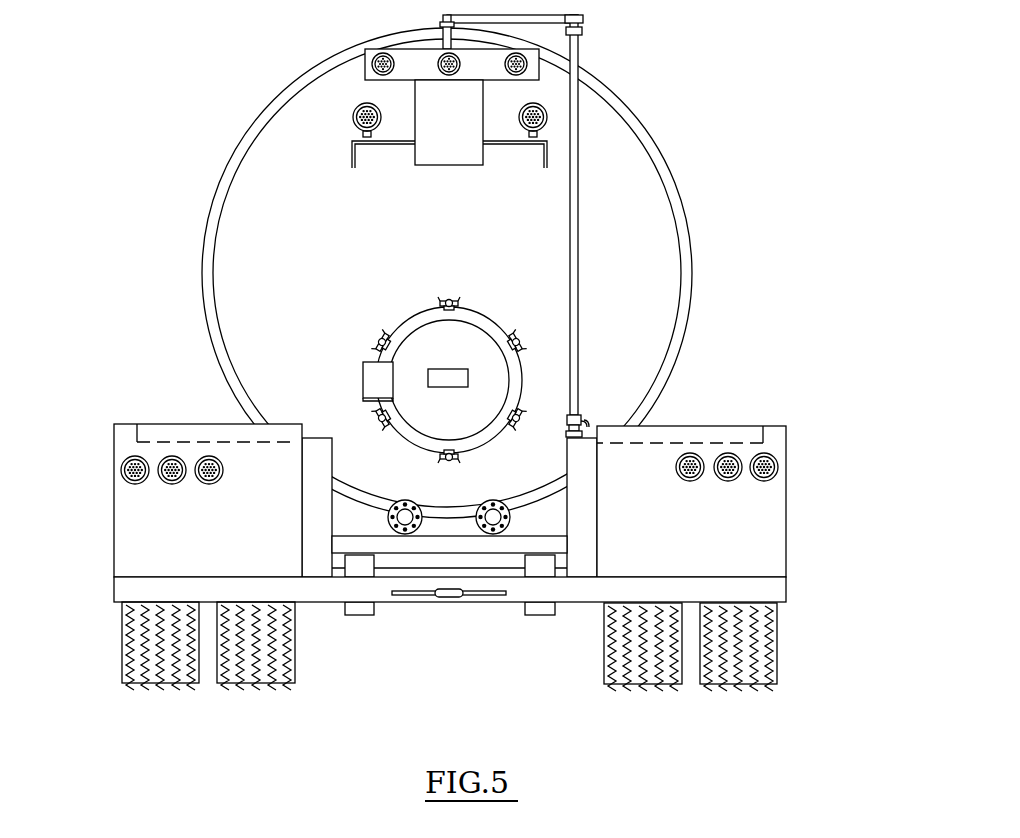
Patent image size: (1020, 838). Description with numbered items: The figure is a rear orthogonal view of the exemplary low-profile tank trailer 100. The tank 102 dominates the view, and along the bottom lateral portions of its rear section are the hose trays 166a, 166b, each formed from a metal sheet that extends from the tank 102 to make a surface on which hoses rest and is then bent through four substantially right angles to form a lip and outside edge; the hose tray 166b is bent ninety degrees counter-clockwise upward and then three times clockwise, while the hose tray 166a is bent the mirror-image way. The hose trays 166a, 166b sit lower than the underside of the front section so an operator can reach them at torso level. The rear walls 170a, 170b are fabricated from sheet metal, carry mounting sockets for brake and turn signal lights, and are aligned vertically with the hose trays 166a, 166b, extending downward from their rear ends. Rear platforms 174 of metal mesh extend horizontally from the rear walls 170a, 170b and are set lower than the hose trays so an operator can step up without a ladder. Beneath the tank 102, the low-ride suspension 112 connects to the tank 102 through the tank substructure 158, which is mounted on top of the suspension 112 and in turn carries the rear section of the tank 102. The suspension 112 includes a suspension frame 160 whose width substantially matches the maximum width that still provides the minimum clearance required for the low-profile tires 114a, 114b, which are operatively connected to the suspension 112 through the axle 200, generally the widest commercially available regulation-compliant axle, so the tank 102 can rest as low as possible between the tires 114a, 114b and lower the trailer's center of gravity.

The low-profile tank trailer 100 is at (437, 381).
The tank 102 is at (663, 125).
The low-ride suspension 112 is at (540, 567).
The low-profile tire 114a is at (304, 694).
The low-profile tire 114b is at (783, 695).
The tank substructure 158 is at (352, 511).
The suspension frame 160 is at (347, 543).
The hose tray 166a is at (205, 440).
The hose tray 166b is at (692, 443).
The rear wall 170a is at (152, 536).
The rear wall 170b is at (735, 513).
The rear platform 174 is at (148, 588).
The axle 200 is at (405, 573).